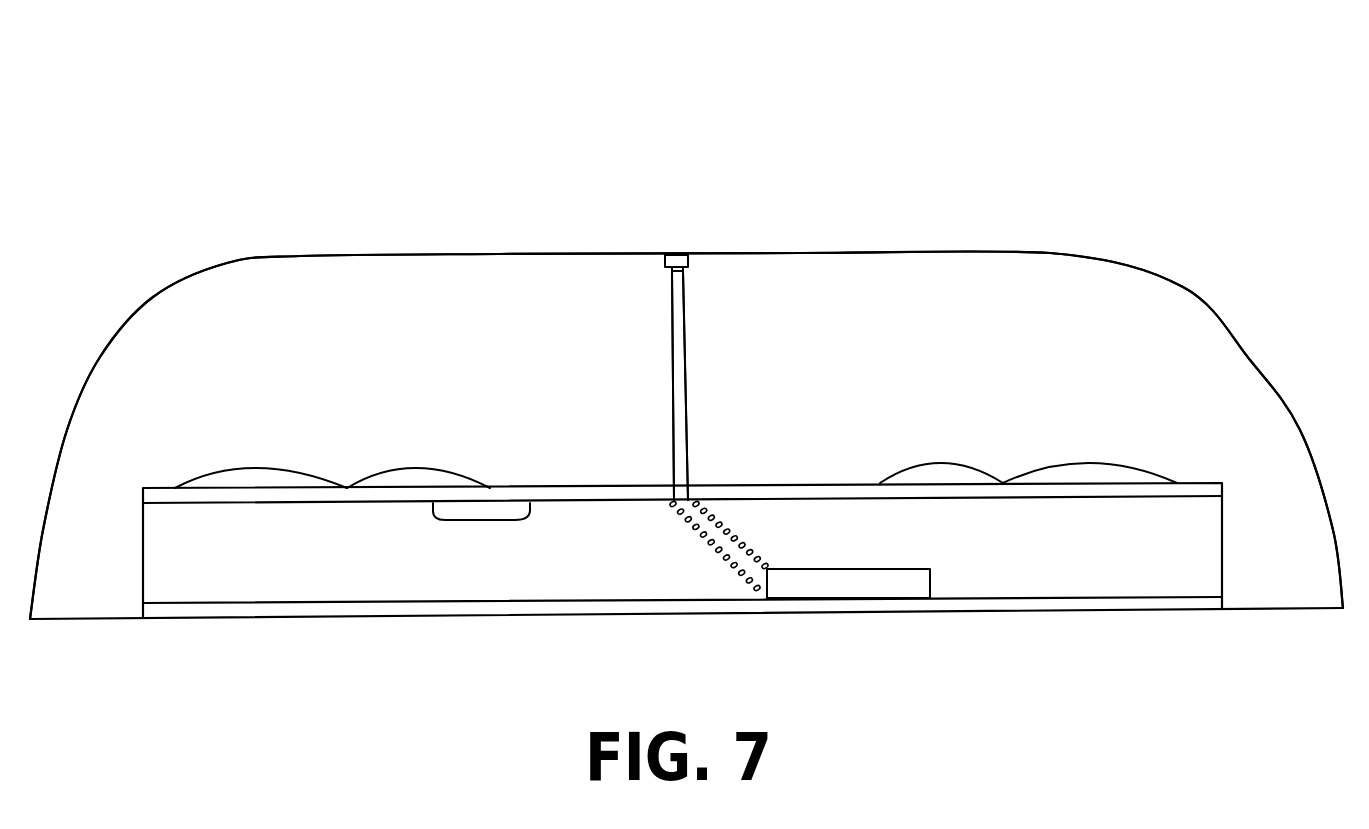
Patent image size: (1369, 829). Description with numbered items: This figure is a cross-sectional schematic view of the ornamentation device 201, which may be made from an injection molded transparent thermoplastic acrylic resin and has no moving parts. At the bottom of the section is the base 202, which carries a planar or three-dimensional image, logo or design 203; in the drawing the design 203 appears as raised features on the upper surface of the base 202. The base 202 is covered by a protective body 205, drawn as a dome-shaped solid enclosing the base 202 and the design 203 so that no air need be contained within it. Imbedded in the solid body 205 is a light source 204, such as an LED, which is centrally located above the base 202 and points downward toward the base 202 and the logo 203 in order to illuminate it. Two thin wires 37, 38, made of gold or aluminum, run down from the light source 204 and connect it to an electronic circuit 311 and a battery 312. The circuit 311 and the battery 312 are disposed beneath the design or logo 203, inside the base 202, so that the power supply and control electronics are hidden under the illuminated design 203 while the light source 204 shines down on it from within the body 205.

The ornamentation device 201 is at (1053, 182).
The base 202 is at (1258, 610).
The logo or design 203 is at (427, 478).
The light source 204 is at (678, 255).
The protective body 205 is at (1167, 310).
The thin wire 37 is at (668, 317).
The thin wire 38 is at (690, 317).
The electronic circuit 311 is at (462, 520).
The battery 312 is at (893, 578).